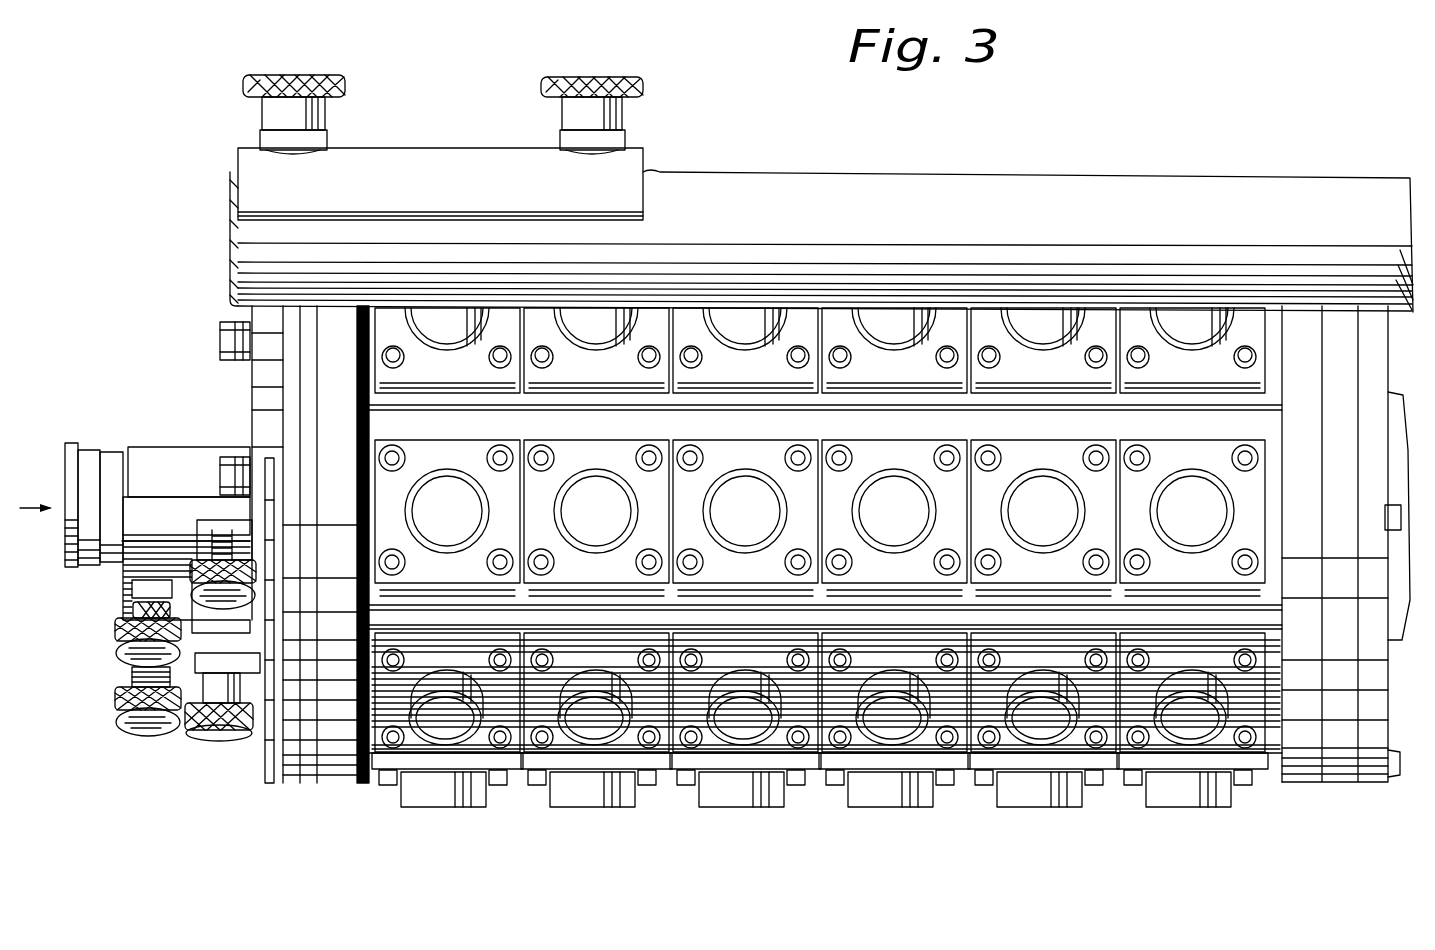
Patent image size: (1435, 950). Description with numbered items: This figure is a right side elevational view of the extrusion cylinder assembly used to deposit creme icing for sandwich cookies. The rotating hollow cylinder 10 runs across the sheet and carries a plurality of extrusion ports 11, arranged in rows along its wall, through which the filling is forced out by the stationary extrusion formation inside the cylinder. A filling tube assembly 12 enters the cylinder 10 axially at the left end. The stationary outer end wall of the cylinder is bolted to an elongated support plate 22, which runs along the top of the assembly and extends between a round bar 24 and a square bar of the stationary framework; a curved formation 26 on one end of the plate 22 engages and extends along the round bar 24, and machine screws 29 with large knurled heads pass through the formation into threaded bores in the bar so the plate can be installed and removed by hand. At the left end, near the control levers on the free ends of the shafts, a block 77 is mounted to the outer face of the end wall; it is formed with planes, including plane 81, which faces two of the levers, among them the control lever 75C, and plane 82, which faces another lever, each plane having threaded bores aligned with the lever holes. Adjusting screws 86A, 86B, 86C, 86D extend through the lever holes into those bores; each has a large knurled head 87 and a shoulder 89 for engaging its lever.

The hollow cylinder 10 is at (186, 298).
The extrusion ports 11 is at (748, 312).
The filling tube assembly 12 is at (156, 442).
The support plate 22 is at (266, 324).
The round bar 24 is at (1093, 182).
The curved formation 26 is at (414, 148).
The machine screws 29 is at (243, 83).
The control lever 75C is at (138, 582).
The block 77 is at (178, 512).
The plane 81 is at (140, 545).
The plane 82 is at (238, 524).
The adjusting screw 86A is at (219, 750).
The adjusting screw 86B is at (138, 744).
The adjusting screw 86C is at (113, 658).
The adjusting screw 86D is at (205, 607).
The knurled heads 87 is at (232, 733).
The shoulders 89 is at (266, 740).